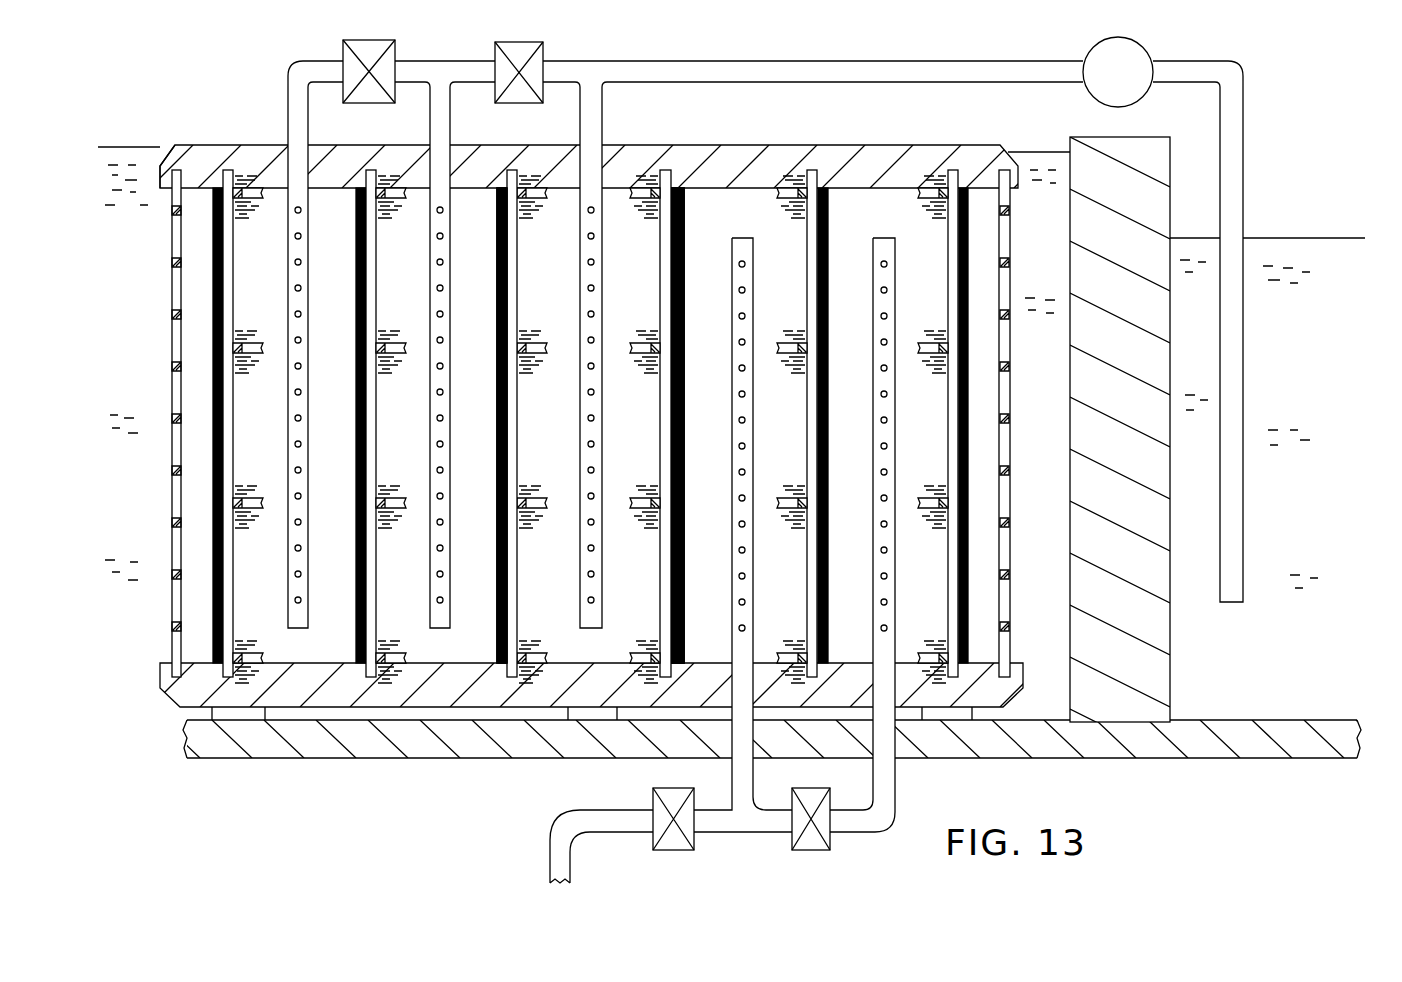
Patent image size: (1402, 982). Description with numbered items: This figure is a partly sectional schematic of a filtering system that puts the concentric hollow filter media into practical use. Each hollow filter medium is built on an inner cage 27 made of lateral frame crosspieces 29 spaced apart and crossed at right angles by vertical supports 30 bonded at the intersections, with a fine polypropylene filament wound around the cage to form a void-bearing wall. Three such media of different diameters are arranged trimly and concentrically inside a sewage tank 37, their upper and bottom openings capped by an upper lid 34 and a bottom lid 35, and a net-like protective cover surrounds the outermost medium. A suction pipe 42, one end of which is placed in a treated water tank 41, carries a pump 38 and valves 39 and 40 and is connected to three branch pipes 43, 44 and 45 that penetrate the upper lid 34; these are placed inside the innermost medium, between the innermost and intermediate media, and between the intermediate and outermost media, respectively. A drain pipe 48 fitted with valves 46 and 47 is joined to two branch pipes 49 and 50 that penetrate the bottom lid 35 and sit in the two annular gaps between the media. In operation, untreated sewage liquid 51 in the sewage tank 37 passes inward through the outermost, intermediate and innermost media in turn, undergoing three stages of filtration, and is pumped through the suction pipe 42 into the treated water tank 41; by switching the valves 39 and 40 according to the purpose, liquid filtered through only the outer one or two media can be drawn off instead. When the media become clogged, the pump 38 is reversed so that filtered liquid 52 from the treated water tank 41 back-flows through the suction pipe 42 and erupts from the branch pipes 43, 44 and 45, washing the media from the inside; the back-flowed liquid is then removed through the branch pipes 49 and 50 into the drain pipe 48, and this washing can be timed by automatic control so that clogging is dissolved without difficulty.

The inner cage 27 is at (517, 460).
The lateral frame crosspieces 29 is at (640, 345).
The vertical supports 30 is at (671, 447).
The upper lid 34 is at (657, 158).
The bottom lid 35 is at (420, 695).
The sewage tank 37 is at (148, 146).
The pump 38 is at (1093, 90).
The valve 39 is at (520, 104).
The valve 40 is at (353, 103).
The treated water tank 41 is at (1262, 234).
The suction pipe 42 is at (755, 82).
The branch pipe 43 is at (602, 277).
The branch pipe 44 is at (450, 277).
The branch pipe 45 is at (308, 275).
The valve 46 is at (830, 848).
The valve 47 is at (694, 848).
The drain pipe 48 is at (550, 838).
The perforated pipe 49 is at (895, 559).
The perforated pipe 50 is at (752, 559).
The untreated sewage liquid 51 is at (157, 158).
The filtered liquid 52 is at (1304, 246).